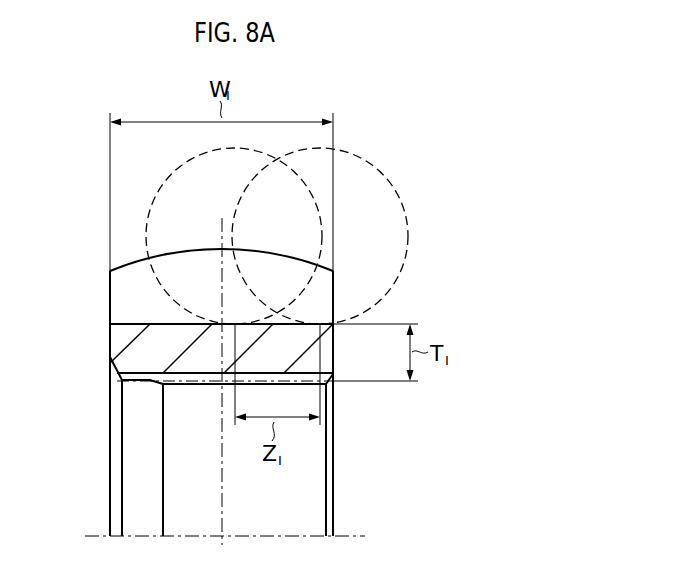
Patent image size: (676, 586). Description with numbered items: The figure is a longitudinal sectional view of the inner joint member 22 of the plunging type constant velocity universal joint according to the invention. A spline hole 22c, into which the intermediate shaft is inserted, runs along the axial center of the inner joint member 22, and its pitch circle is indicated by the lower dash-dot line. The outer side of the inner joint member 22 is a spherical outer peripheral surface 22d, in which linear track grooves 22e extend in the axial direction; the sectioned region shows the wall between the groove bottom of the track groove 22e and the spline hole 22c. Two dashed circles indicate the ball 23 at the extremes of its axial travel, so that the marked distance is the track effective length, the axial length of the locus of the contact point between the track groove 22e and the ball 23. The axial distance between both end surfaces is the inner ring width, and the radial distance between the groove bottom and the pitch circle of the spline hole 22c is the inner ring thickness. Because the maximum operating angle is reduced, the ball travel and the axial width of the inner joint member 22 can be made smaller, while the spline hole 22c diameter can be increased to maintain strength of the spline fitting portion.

The inner joint member 22 is at (104, 347).
The spline hole 22c is at (183, 387).
The spherical outer peripheral surface 22d is at (132, 262).
The track groove 22e is at (135, 323).
The ball 23 is at (403, 200).